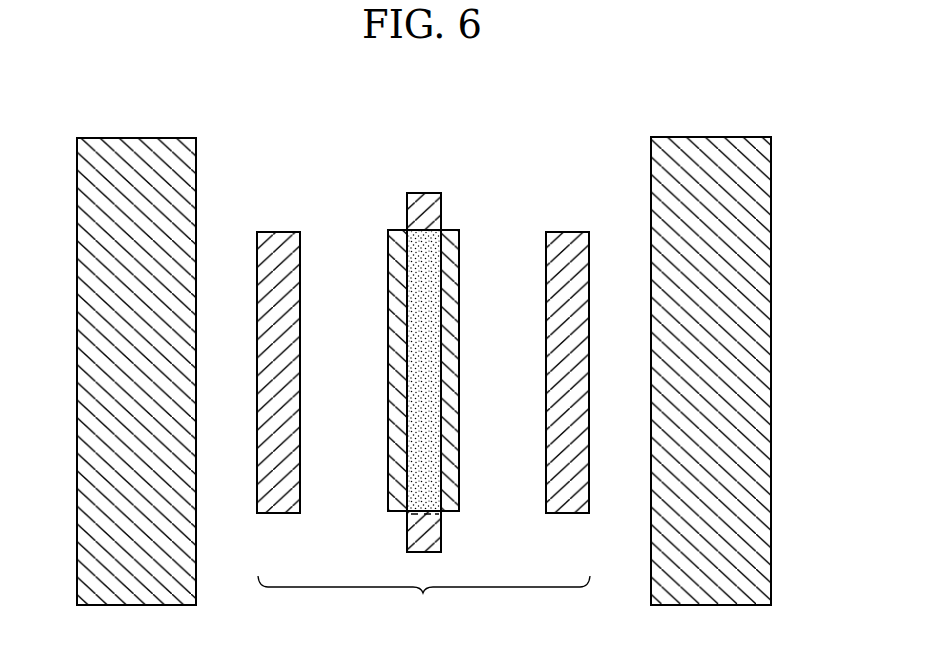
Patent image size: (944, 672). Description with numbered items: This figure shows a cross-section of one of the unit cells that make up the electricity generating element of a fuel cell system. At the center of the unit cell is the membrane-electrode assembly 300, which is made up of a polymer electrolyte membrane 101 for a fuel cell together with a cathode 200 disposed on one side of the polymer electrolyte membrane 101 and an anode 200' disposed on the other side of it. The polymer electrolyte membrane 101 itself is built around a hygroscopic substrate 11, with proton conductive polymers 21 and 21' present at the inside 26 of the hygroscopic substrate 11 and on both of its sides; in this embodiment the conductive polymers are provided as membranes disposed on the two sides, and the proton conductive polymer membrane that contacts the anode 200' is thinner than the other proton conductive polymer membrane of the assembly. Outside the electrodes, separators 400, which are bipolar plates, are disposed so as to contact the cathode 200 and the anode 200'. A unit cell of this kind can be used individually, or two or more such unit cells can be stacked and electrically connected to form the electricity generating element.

The separator 400 is at (92, 369).
The cathode 200 is at (278, 347).
The anode 200' is at (573, 347).
The polymer electrolyte membrane 101 is at (401, 184).
The hygroscopic substrate 11 is at (433, 205).
The proton conductive polymer 21 is at (369, 370).
The proton conductive polymer 21' is at (484, 370).
The inside of the hygroscopic substrate 26 is at (443, 493).
The membrane-electrode assembly 300 is at (424, 599).